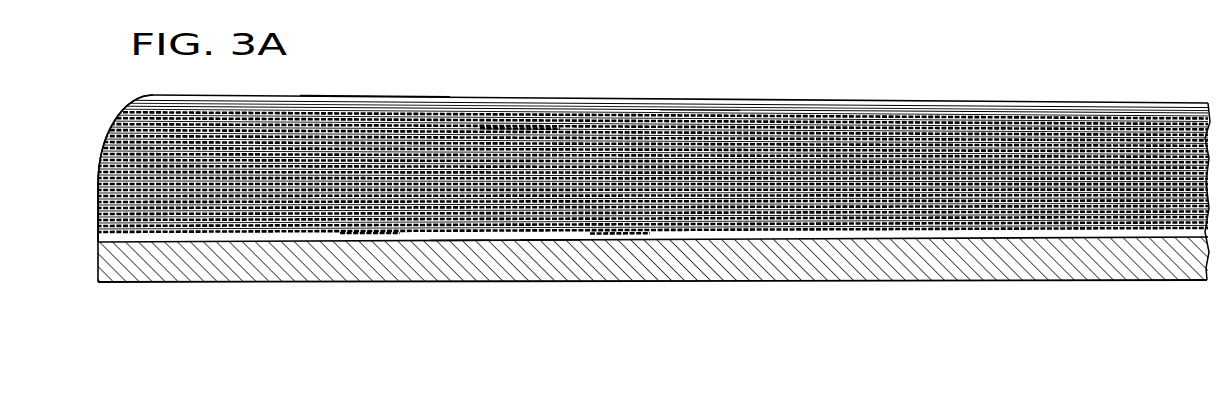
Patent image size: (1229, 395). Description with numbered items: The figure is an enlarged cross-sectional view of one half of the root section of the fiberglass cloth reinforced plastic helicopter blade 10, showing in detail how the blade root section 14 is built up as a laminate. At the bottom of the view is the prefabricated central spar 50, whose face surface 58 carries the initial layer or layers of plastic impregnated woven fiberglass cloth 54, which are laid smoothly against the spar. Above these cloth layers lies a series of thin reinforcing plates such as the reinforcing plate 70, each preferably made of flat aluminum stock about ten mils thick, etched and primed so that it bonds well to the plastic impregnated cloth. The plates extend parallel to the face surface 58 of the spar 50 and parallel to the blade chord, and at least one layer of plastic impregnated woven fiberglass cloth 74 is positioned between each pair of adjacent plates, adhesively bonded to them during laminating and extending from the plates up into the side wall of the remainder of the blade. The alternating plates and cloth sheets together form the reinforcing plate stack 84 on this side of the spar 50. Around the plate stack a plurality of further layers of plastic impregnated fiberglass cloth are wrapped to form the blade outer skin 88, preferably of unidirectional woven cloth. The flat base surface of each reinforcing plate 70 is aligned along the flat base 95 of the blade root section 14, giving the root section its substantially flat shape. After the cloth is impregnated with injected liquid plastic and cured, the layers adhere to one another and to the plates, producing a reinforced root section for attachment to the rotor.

The fiberglass cloth reinforced plastic helicopter blade 10 is at (984, 92).
The blade root section 14 is at (370, 90).
The reinforcing plate stack 84 is at (508, 128).
The blade outer skin 88 is at (687, 107).
The face surface of spar 58 is at (362, 236).
The layer of plastic impregnated woven fiberglass cloth 54 is at (455, 238).
The reinforcing plate 70 is at (548, 238).
The layer of plastic impregnated woven fiberglass cloth 74 is at (620, 235).
The spar 50 is at (1042, 215).
The flat base of blade root section 95 is at (98, 203).